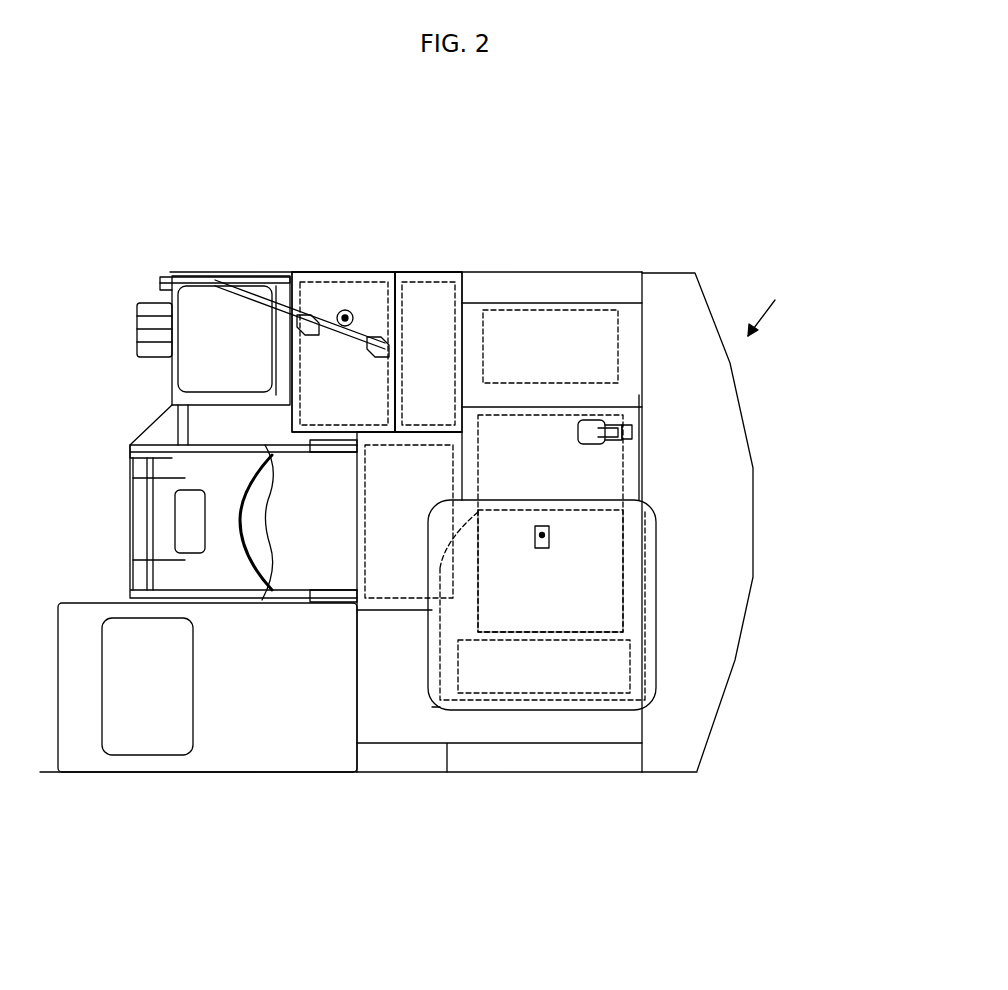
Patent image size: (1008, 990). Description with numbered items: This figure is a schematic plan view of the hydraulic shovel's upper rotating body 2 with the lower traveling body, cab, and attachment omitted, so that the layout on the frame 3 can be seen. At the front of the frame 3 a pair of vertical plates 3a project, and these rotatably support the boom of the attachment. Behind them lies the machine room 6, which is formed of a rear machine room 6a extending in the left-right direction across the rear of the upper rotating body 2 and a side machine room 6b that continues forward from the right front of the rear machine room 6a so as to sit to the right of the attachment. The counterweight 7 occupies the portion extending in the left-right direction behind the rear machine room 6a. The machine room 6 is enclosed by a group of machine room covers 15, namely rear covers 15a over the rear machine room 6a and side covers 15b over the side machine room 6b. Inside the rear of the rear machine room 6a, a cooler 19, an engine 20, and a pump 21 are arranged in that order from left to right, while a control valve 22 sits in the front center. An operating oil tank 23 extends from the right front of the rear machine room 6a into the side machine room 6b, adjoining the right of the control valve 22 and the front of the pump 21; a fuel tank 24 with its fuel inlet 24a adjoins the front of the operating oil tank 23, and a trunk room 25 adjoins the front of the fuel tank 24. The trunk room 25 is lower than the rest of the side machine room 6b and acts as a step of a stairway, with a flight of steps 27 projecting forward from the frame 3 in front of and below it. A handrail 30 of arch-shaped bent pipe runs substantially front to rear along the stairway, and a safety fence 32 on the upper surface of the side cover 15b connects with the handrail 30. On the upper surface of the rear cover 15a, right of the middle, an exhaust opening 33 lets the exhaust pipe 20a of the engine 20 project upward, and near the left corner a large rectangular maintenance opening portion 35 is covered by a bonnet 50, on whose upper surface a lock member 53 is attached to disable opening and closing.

The upper rotating body 2 is at (531, 176).
The frame 3 is at (308, 757).
The vertical plates 3a is at (276, 520).
The machine room 6 is at (343, 352).
The rear machine room 6a is at (596, 760).
The side machine room 6b is at (300, 272).
The counterweight 7 is at (742, 519).
The machine room cover 15 is at (428, 352).
The rear covers 15a is at (478, 772).
The side covers 15b is at (385, 272).
The cooler 19 is at (630, 665).
The engine 20 is at (625, 474).
The exhaust pipe 20a is at (638, 432).
The pump 21 is at (620, 332).
The control valve 22 is at (396, 598).
The operating oil tank 23 is at (445, 288).
The fuel tank 24 is at (358, 288).
The fuel inlet 24a is at (346, 300).
The trunk room 25 is at (257, 278).
The flight of steps 27 is at (140, 332).
The handrail 30 is at (186, 277).
The safety fence 32 is at (358, 352).
The exhaust opening 33 is at (592, 446).
The maintenance opening portion 35 is at (640, 558).
The bonnet 50 is at (657, 610).
The lock member 53 is at (552, 535).